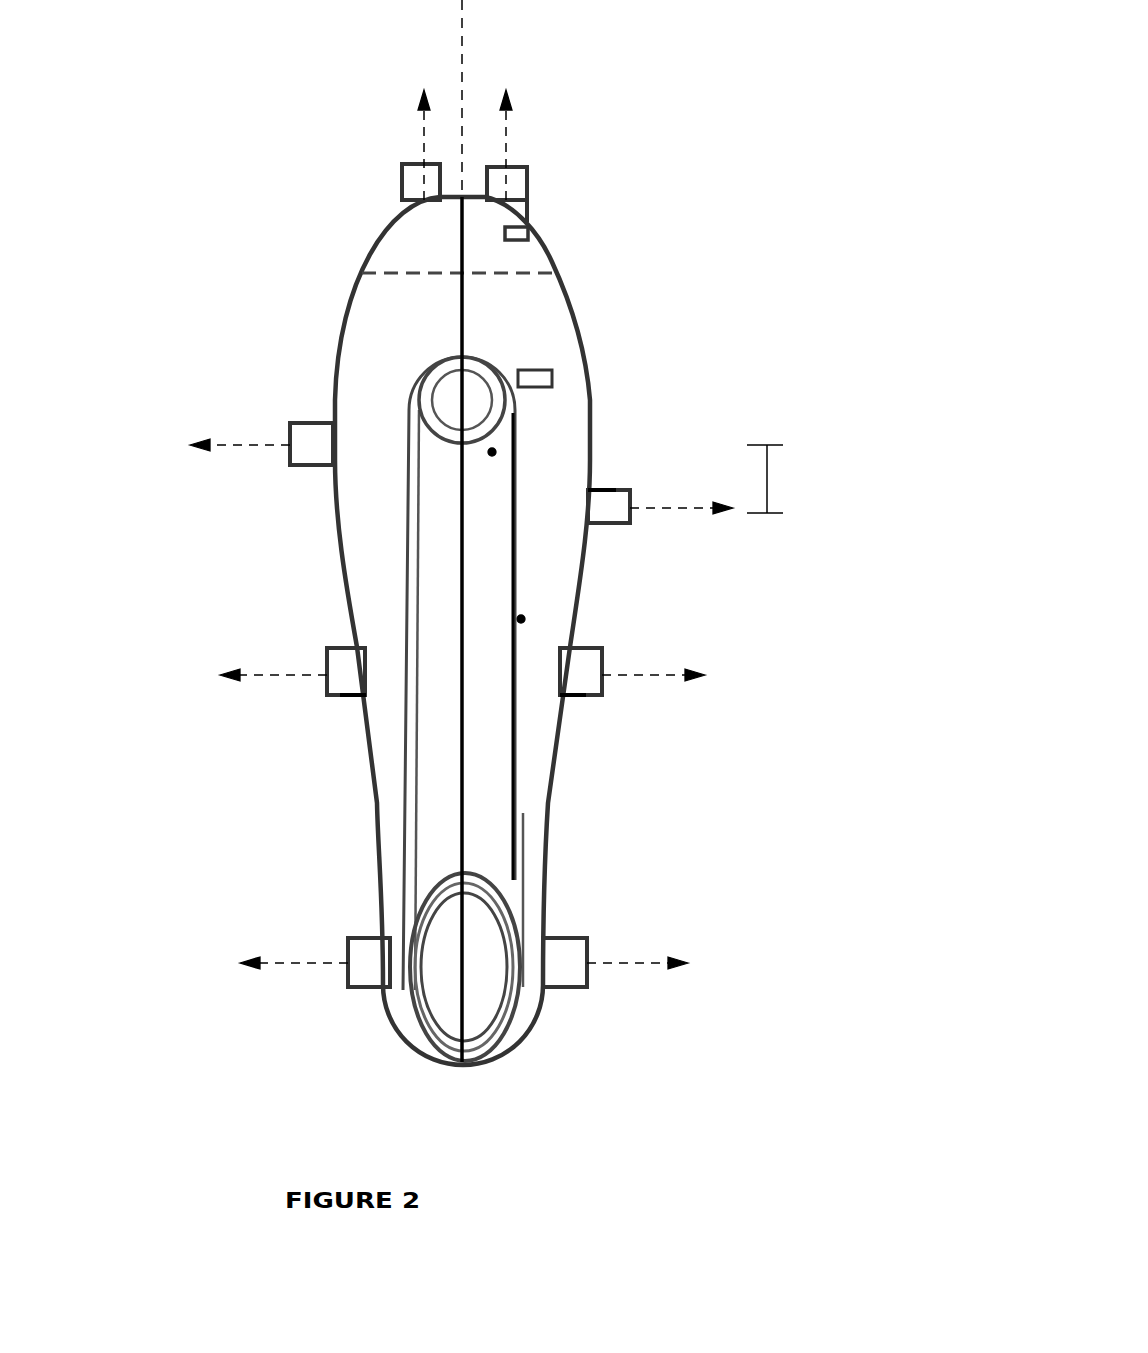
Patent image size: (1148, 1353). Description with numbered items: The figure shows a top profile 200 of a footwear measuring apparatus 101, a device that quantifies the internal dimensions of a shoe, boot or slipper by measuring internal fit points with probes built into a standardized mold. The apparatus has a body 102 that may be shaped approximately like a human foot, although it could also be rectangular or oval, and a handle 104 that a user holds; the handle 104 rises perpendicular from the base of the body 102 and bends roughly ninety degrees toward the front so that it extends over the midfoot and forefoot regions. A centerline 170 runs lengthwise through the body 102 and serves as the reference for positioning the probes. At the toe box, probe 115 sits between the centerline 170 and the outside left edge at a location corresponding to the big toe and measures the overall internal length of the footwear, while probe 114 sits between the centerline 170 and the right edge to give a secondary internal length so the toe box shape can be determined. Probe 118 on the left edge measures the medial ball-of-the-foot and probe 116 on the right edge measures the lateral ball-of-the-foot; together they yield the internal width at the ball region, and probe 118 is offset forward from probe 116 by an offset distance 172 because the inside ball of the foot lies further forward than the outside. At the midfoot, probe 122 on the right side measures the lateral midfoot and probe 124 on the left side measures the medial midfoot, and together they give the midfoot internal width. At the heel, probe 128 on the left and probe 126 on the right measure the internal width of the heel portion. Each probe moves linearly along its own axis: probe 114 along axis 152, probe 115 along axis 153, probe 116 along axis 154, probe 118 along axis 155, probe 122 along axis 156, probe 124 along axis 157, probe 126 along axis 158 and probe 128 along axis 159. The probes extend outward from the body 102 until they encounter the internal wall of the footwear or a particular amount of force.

The footwear measuring apparatus 101 is at (722, 92).
The body 102 is at (398, 305).
The handle 104 is at (440, 530).
The probe 114 is at (513, 180).
The probe 115 is at (400, 185).
The probe 116 is at (610, 492).
The probe 118 is at (292, 443).
The probe 122 is at (577, 652).
The probe 124 is at (325, 660).
The probe 126 is at (552, 945).
The probe 128 is at (348, 948).
The axis 152 is at (507, 135).
The axis 153 is at (422, 128).
The axis 154 is at (686, 508).
The axis 155 is at (268, 447).
The axis 156 is at (665, 677).
The axis 157 is at (305, 677).
The axis 158 is at (640, 965).
The axis 159 is at (325, 965).
The centerline 170 is at (463, 32).
The offset distance 172 is at (768, 485).
The top profile 200 is at (521, 571).